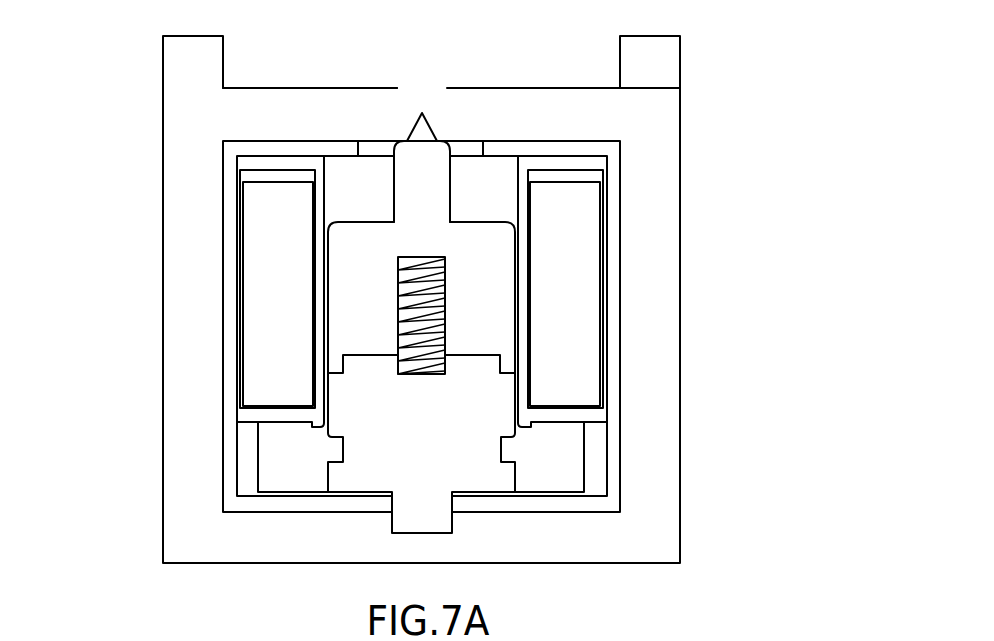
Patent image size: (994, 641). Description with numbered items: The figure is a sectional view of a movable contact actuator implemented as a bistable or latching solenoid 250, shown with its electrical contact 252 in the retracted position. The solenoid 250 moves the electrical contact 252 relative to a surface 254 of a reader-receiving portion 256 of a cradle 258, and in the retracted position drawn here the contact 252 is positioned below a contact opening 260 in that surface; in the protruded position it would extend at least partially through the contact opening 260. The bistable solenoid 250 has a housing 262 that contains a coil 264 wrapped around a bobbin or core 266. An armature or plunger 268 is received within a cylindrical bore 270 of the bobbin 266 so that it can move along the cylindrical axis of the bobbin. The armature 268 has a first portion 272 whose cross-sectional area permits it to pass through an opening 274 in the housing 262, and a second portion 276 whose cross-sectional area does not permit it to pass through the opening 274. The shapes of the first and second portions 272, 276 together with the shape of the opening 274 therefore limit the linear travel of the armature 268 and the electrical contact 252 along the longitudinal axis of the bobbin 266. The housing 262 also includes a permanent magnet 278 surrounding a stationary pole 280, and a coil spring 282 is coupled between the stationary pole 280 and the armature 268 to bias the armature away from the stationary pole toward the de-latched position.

The bistable solenoid 250 is at (655, 226).
The electrical contact 252 is at (433, 127).
The surface 254 is at (297, 88).
The reader-receiving portion 256 is at (597, 37).
The cradle 258 is at (132, 84).
The contact opening 260 is at (397, 84).
The housing 262 is at (623, 275).
The coil 264 is at (258, 321).
The bobbin 266 is at (322, 275).
The armature 268 is at (347, 336).
The cylindrical bore 270 is at (493, 170).
The first portion 272 is at (393, 188).
The opening 274 is at (367, 140).
The second portion 276 is at (488, 308).
The permanent magnet 278 is at (560, 462).
The stationary pole 280 is at (353, 481).
The coil spring 282 is at (446, 262).